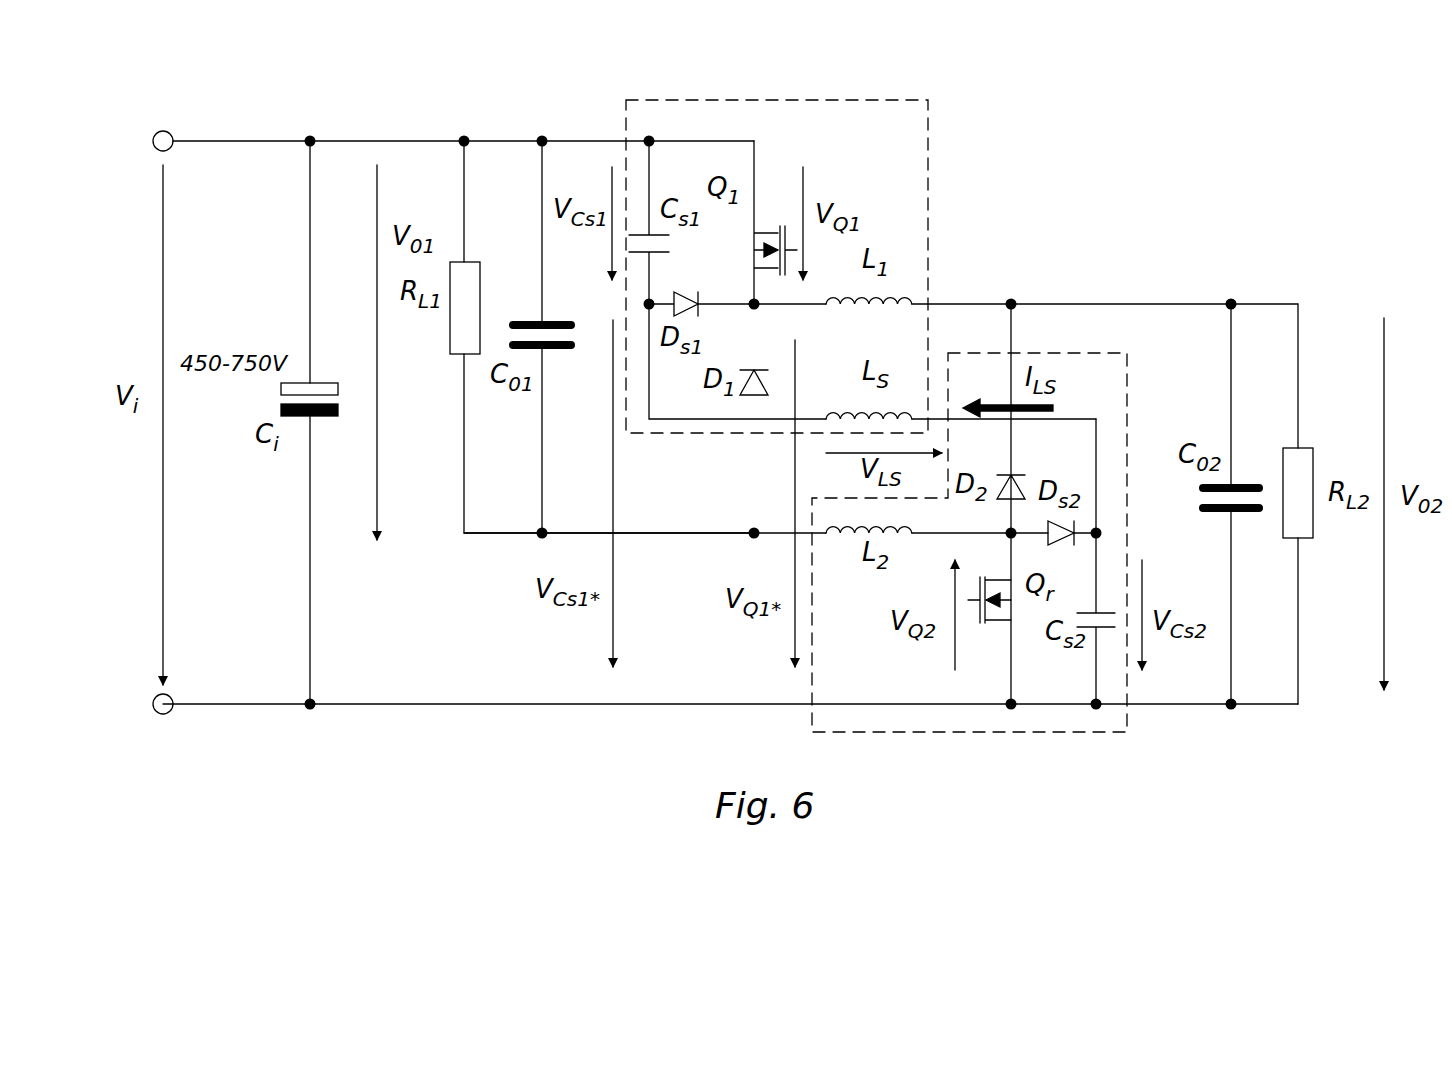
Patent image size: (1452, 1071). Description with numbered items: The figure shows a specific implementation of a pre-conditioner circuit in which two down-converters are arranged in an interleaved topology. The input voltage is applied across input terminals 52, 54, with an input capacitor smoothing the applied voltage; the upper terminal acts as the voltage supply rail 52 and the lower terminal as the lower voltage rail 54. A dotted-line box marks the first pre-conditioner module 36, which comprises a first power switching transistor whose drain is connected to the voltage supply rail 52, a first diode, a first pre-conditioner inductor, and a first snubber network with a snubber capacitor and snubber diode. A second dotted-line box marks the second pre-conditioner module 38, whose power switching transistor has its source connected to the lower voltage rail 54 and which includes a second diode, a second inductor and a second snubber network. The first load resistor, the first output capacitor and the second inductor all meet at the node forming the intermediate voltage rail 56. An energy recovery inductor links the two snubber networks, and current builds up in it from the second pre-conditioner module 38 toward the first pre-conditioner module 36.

The input terminal 52 is at (165, 131).
The input terminal 54 is at (161, 714).
The first pre-conditioner module 36 is at (928, 188).
The second pre-conditioner module 38 is at (944, 732).
The intermediate voltage rail 56 is at (484, 535).